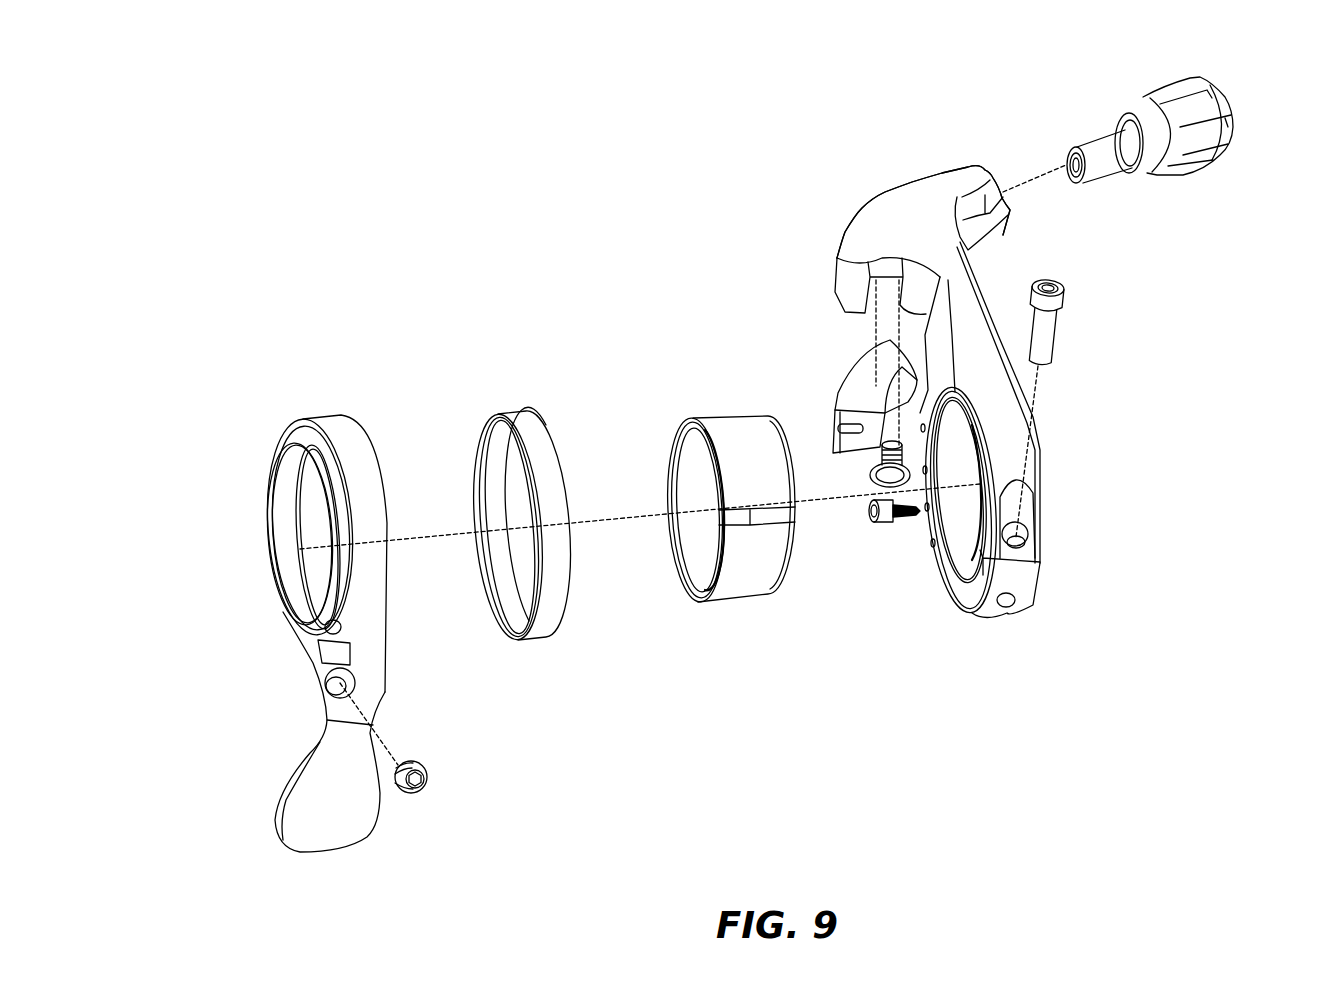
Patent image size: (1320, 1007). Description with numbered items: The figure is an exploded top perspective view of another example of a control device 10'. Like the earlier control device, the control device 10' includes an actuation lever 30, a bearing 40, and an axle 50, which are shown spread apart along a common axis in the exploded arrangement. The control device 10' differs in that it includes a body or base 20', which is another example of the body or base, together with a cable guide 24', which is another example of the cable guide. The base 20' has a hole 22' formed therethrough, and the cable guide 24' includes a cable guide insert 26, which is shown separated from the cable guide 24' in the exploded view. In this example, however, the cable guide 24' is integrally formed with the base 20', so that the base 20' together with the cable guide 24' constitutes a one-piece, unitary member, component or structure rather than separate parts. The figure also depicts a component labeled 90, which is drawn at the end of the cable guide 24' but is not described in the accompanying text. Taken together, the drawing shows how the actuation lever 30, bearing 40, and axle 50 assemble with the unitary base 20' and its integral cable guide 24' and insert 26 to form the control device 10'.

The control device 10' is at (629, 290).
The body or base 20' is at (906, 352).
The hole 22' is at (940, 505).
The cable guide 24' is at (922, 225).
The cable guide insert 26 is at (864, 383).
The actuation lever 30 is at (265, 385).
The bearing 40 is at (485, 380).
The axle 50 is at (683, 368).
The barrel adjuster 90 is at (1225, 211).